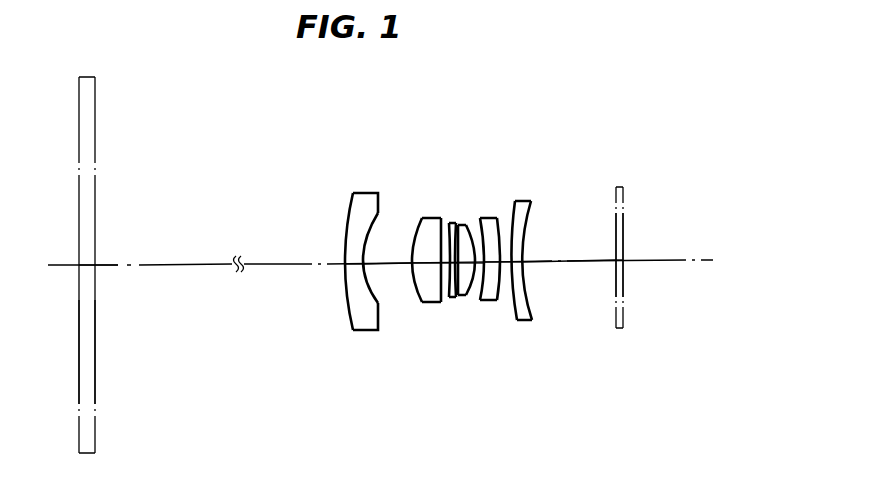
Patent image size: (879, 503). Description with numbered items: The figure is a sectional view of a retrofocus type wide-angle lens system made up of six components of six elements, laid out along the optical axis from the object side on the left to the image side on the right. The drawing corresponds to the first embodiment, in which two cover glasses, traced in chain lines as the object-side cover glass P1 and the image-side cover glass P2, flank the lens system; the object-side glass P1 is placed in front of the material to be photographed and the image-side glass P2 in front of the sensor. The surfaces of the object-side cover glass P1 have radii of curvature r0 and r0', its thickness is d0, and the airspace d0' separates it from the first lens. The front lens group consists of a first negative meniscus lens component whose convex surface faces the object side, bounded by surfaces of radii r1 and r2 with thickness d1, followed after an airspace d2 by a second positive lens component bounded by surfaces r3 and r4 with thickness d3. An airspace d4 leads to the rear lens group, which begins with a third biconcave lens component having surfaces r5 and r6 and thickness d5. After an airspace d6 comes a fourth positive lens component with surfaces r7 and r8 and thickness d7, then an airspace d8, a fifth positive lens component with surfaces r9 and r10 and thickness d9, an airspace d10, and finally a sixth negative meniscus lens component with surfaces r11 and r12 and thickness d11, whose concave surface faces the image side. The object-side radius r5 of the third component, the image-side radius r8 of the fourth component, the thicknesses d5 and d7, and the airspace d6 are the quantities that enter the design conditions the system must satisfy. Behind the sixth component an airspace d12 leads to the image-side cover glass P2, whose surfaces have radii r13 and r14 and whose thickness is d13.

The object-side cover glass P1 is at (88, 455).
The image-side cover glass P2 is at (620, 330).
The radius of curvature of object-side cover glass surface r0 is at (60, 373).
The radius of curvature of object-side cover glass surface r0' is at (119, 373).
The thickness of object-side cover glass d0 is at (102, 246).
The airspace behind object-side cover glass d0' is at (155, 246).
The radius of curvature of first surface r1 is at (353, 318).
The radius of curvature of second surface r2 is at (378, 315).
The thickness of first lens component d1 is at (351, 252).
The airspace between first and second lens components d2 is at (393, 262).
The radius of curvature of third surface r3 is at (418, 302).
The radius of curvature of fourth surface r4 is at (440, 303).
The thickness of second lens component d3 is at (418, 250).
The airspace between second and third lens components d4 is at (444, 248).
The radius of curvature of object-side surface of third lens component r5 is at (450, 298).
The radius of curvature of sixth surface r6 is at (458, 298).
The thickness of third lens component d5 is at (452, 245).
The airspace between third and fourth lens components d6 is at (468, 242).
The radius of curvature of seventh surface r7 is at (468, 297).
The radius of curvature of image-side surface of fourth lens component r8 is at (476, 298).
The thickness of fourth lens component d7 is at (478, 245).
The airspace between fourth and fifth lens components d8 is at (496, 245).
The radius of curvature of ninth surface r9 is at (486, 300).
The radius of curvature of tenth surface r10 is at (500, 303).
The thickness of fifth lens component d9 is at (505, 245).
The airspace between fifth and sixth lens components d10 is at (520, 228).
The radius of curvature of eleventh surface r11 is at (520, 320).
The radius of curvature of twelfth surface r12 is at (535, 312).
The thickness of sixth lens component d11 is at (517, 252).
The airspace between sixth lens component and image-side cover glass d12 is at (585, 260).
The radius of curvature of image-side cover glass surface r13 is at (617, 322).
The radius of curvature of image-side cover glass surface r14 is at (624, 322).
The thickness of image-side cover glass d13 is at (622, 259).